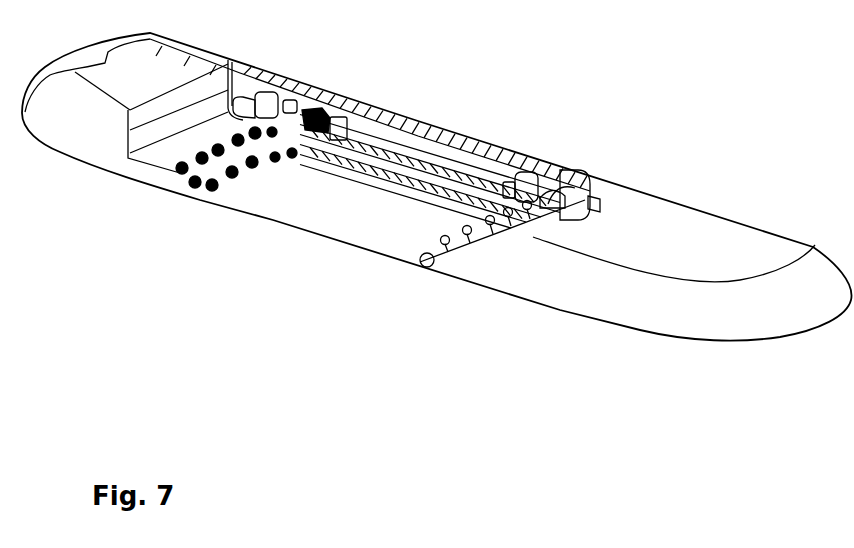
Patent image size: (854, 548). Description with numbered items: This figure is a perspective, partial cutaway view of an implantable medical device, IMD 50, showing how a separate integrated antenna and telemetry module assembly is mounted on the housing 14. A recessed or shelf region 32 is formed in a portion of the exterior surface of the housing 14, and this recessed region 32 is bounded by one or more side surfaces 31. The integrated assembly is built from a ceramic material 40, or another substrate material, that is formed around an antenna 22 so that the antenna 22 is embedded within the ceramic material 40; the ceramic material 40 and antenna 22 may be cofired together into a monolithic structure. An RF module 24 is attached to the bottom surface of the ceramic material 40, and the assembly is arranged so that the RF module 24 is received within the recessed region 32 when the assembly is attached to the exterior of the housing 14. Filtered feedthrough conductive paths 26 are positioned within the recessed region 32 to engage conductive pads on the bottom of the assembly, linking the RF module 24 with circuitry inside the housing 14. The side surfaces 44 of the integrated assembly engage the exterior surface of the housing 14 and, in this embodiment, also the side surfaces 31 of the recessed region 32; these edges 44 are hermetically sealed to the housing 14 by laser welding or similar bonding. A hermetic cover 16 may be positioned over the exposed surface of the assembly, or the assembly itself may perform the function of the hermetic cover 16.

The housing 14 is at (67, 128).
The hermetic cover 16 is at (305, 81).
The antenna 22 is at (418, 120).
The RF module 24 is at (464, 133).
The filtered feedthrough conductive paths 26 is at (549, 181).
The side surfaces 31 is at (579, 166).
The recessed region 32 is at (588, 194).
The ceramic material 40 is at (500, 178).
The side surfaces 44 is at (228, 60).
The IMD 50 is at (474, 340).